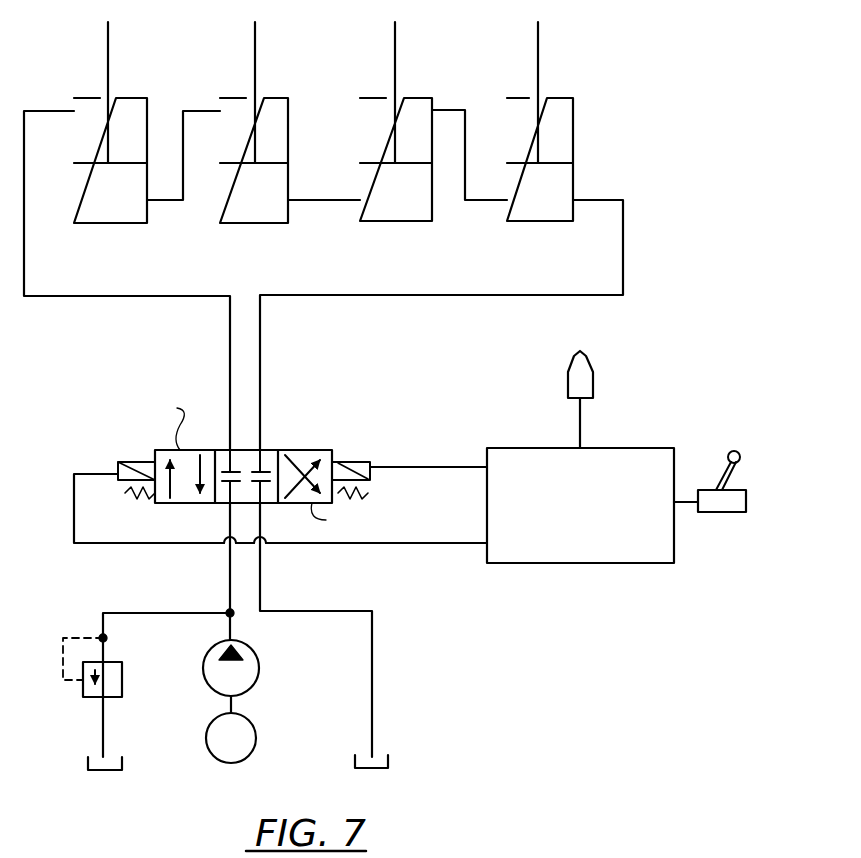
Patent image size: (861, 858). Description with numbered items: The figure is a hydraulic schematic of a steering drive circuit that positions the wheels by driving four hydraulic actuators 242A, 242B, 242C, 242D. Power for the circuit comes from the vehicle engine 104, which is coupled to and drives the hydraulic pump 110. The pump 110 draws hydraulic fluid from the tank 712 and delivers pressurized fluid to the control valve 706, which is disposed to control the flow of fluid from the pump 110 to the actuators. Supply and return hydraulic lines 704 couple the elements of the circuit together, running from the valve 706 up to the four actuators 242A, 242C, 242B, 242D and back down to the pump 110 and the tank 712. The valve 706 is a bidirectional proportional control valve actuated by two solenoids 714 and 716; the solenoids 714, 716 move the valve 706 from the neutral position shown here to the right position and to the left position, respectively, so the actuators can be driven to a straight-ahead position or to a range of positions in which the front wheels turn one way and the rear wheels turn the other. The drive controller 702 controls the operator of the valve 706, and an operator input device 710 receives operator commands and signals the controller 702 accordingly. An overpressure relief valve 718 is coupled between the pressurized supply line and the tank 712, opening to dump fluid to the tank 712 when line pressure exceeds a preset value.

The hydraulic actuator 242A is at (152, 88).
The hydraulic actuator 242C is at (318, 66).
The hydraulic actuator 242B is at (432, 88).
The hydraulic actuator 242D is at (565, 85).
The supply and return hydraulic lines 704 is at (198, 272).
The control valve 706 is at (302, 450).
The solenoid 714 is at (147, 462).
The solenoid 716 is at (357, 462).
The drive controller 702 is at (615, 563).
The operator input device 710 is at (725, 512).
The hydraulic pump 110 is at (260, 667).
The vehicle engine 104 is at (256, 742).
The overpressure relief valve 718 is at (83, 697).
The tank 712 is at (86, 766).